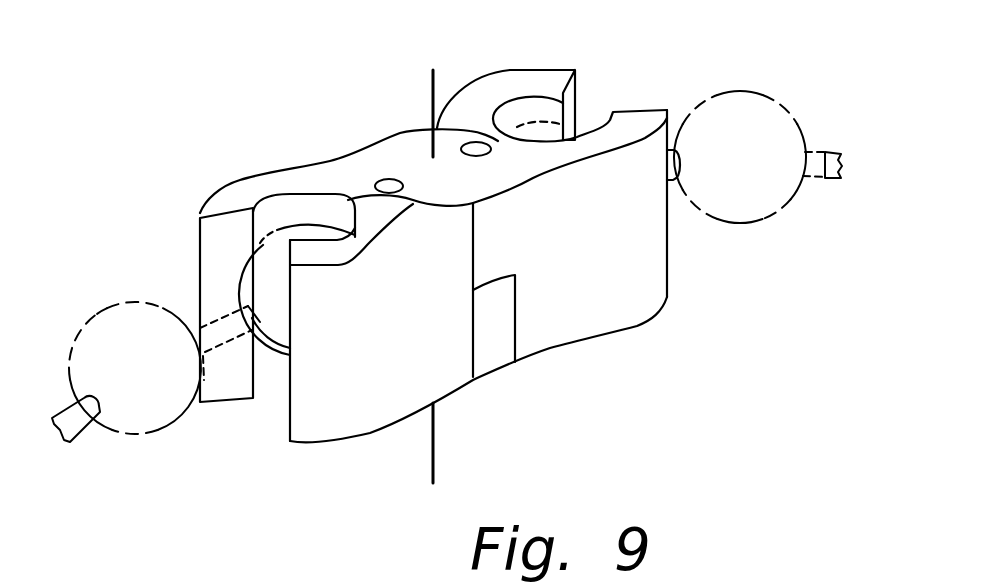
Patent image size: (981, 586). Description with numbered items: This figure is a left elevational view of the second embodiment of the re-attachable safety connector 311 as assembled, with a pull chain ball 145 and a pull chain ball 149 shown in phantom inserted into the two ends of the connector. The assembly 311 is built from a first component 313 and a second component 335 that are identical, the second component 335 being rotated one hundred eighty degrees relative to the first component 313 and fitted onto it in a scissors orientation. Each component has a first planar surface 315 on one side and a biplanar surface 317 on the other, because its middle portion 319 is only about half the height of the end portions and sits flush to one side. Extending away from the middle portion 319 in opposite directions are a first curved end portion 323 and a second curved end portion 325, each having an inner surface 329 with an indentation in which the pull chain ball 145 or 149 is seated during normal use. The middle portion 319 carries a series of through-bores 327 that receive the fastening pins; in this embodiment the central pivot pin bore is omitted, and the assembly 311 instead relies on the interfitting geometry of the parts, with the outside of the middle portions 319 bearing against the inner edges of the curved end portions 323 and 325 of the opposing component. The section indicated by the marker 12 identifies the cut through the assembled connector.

The re-attachable safety connector 311 is at (190, 172).
The first component 313 is at (660, 258).
The first planar surface 315 is at (277, 183).
The biplanar surface 317 is at (523, 83).
The middle portion 319 is at (428, 113).
The first curved end portion 323 is at (470, 462).
The second curved end portion 325 is at (698, 303).
The through-bores 327 is at (403, 187).
The inner surface 329 is at (270, 213).
The second component 335 is at (300, 407).
The pull chain ball 145 is at (100, 312).
The pull chain ball 149 is at (755, 92).
The section line 12 is at (433, 80).